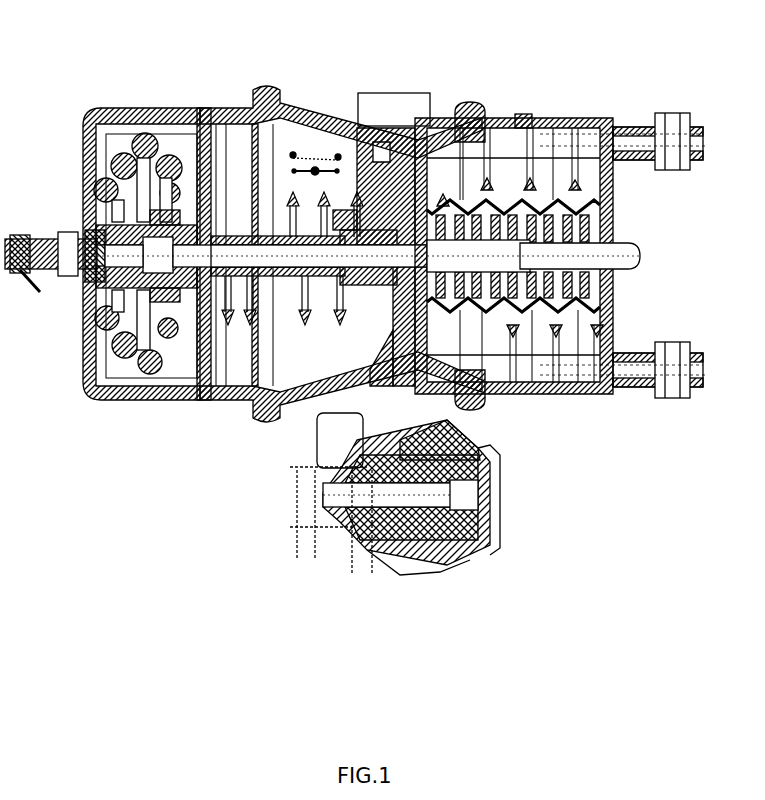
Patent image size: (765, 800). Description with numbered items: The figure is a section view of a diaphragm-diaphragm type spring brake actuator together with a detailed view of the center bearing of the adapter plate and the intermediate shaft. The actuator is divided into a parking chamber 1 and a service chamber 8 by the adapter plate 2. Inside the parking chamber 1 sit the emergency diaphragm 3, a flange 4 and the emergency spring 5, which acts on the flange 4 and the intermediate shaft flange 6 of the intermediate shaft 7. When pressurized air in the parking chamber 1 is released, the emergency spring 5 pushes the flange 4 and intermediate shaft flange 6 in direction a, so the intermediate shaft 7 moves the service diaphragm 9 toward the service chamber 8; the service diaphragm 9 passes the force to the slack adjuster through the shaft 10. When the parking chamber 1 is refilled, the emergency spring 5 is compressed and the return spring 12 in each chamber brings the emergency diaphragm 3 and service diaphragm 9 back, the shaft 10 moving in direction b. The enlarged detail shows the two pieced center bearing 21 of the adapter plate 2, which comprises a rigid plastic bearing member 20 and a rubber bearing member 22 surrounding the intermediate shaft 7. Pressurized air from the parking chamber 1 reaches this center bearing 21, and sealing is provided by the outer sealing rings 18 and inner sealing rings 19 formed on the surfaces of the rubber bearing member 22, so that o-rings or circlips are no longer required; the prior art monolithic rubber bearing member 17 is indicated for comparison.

The parking chamber 1 is at (336, 154).
The adapter plate 2 is at (333, 112).
The emergency diaphragm 3 is at (244, 110).
The flange 4 is at (197, 132).
The emergency spring 5 is at (148, 143).
The intermediate shaft flange 6 is at (221, 268).
The intermediate shaft 7 is at (292, 256).
The service chamber 8 is at (520, 163).
The service diaphragm 9 is at (480, 130).
The shaft 10 is at (452, 305).
The return spring 12 is at (291, 256).
The rubber bearing member 17 is at (510, 330).
The outer sealing rings 18 is at (423, 547).
The inner sealing rings 19 is at (478, 473).
The rigid plastic bearing member 20 is at (387, 533).
The two pieced center bearing 21 is at (340, 572).
The rubber bearing member 22 is at (445, 548).